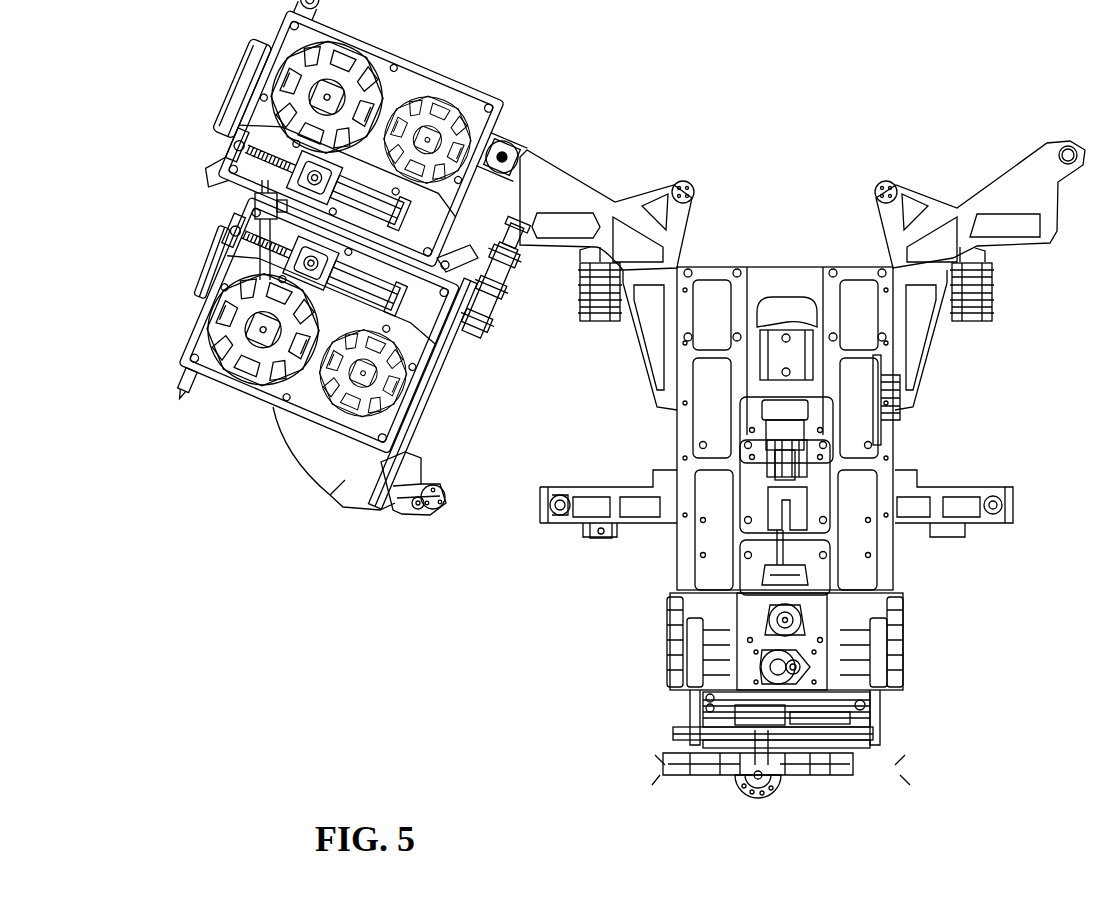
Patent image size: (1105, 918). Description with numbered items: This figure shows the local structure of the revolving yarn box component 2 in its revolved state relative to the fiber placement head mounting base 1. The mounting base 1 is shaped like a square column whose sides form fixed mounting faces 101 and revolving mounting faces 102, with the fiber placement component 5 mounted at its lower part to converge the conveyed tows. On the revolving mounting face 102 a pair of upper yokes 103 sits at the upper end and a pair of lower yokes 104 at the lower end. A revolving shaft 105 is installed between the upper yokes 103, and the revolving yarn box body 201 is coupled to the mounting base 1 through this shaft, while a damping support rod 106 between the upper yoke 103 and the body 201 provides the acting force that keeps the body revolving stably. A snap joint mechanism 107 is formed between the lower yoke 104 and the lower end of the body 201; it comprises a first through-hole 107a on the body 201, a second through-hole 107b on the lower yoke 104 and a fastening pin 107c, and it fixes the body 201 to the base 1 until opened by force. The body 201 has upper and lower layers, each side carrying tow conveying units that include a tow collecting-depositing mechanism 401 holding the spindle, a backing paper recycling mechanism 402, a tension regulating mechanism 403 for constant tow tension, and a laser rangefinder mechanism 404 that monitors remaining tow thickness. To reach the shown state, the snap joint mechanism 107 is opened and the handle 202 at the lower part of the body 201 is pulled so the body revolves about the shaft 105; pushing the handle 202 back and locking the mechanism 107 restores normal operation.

The fiber placement head mounting base 1 is at (768, 250).
The revolving yarn box component 2 is at (200, 80).
The fiber placement component 5 is at (700, 800).
The fixed mounting face 101 is at (895, 470).
The revolving mounting face 102 is at (676, 433).
The upper yoke 103 is at (605, 208).
The lower yoke 104 is at (655, 525).
The revolving shaft 105 is at (512, 146).
The damping support rod 106 is at (512, 255).
The snap joint mechanism 107 is at (575, 586).
The first through-hole 107a is at (415, 510).
The second through-hole 107b is at (583, 520).
The fastening pin 107c is at (548, 517).
The revolving yarn box body 201 is at (342, 470).
The handle 202 is at (178, 396).
The tow collecting-depositing mechanism 401 is at (208, 298).
The backing paper recycling mechanism 402 is at (408, 412).
The tension regulating mechanism 403 is at (246, 268).
The laser rangefinder mechanism 404 is at (260, 203).